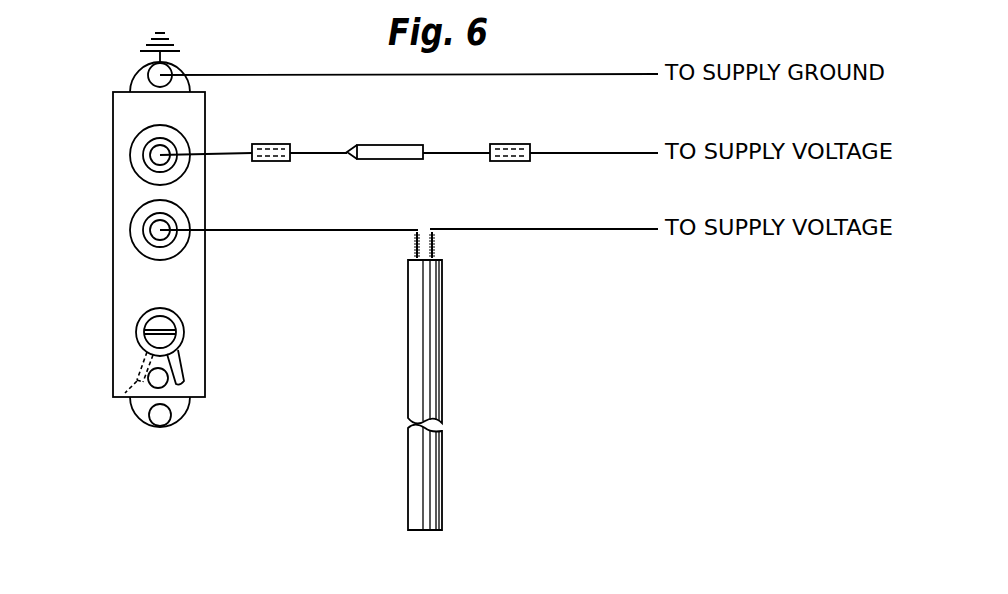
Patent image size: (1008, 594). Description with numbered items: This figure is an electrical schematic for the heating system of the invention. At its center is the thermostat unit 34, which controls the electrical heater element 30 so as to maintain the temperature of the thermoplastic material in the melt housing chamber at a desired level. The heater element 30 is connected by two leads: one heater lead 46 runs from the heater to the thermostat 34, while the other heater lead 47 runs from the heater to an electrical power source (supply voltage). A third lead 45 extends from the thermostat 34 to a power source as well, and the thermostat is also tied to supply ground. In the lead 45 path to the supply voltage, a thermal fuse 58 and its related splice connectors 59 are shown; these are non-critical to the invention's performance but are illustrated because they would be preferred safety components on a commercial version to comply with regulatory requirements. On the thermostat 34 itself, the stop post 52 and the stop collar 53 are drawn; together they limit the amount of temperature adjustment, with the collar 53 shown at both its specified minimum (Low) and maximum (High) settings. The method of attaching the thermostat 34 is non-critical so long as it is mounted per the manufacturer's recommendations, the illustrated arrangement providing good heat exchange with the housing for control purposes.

The electrical heater element 30 is at (442, 358).
The thermostat 34 is at (113, 241).
The third lead 45 is at (617, 152).
The heater lead 46 is at (350, 232).
The heater lead 47 is at (562, 230).
The stop post 52 is at (150, 378).
The stop collar 53 is at (185, 340).
The thermal fuse 58 is at (391, 145).
The splice connectors 59 is at (283, 144).